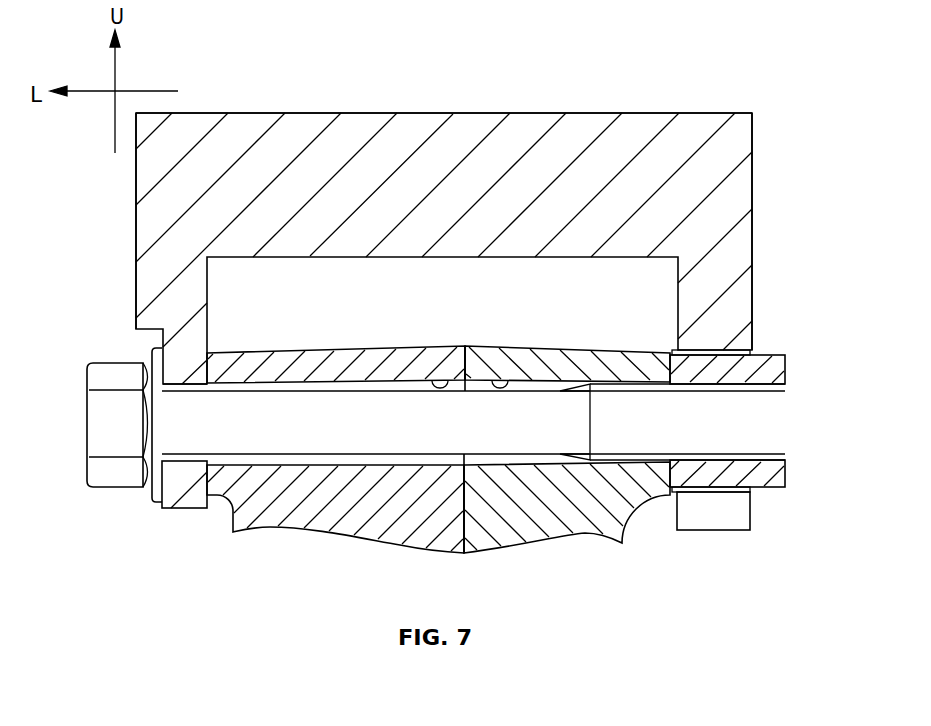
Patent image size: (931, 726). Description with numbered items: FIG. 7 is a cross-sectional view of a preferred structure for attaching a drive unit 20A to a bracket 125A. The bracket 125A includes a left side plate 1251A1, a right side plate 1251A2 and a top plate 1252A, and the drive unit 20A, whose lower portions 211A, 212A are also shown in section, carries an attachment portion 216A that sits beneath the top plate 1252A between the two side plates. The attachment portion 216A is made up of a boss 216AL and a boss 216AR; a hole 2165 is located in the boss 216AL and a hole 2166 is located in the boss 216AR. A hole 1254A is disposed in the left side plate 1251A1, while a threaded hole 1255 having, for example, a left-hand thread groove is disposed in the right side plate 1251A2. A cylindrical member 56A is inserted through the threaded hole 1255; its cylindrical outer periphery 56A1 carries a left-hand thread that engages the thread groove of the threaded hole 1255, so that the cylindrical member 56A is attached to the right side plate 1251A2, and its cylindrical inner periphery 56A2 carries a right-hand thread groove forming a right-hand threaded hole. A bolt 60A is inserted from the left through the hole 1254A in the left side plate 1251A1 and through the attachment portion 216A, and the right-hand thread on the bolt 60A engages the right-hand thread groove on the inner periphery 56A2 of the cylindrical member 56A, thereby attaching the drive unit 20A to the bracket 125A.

The bracket 125A is at (435, 312).
The top plate 1252A is at (437, 113).
The left side plate 1251A1 is at (138, 284).
The right side plate 1251A2 is at (740, 297).
The hole 1254A is at (178, 505).
The threaded hole 1255 is at (724, 492).
The bolt 60A is at (103, 372).
The drive unit 20A is at (429, 430).
The attachment portion 216A is at (438, 342).
The boss 216AL is at (330, 360).
The boss 216AR is at (572, 352).
The hole 2165 is at (440, 381).
The hole 2166 is at (500, 381).
The left body portion 211A is at (228, 522).
The right body portion 212A is at (634, 512).
The cylindrical member 56A is at (741, 403).
The outer periphery 56A1 is at (735, 345).
The inner periphery 56A2 is at (714, 459).